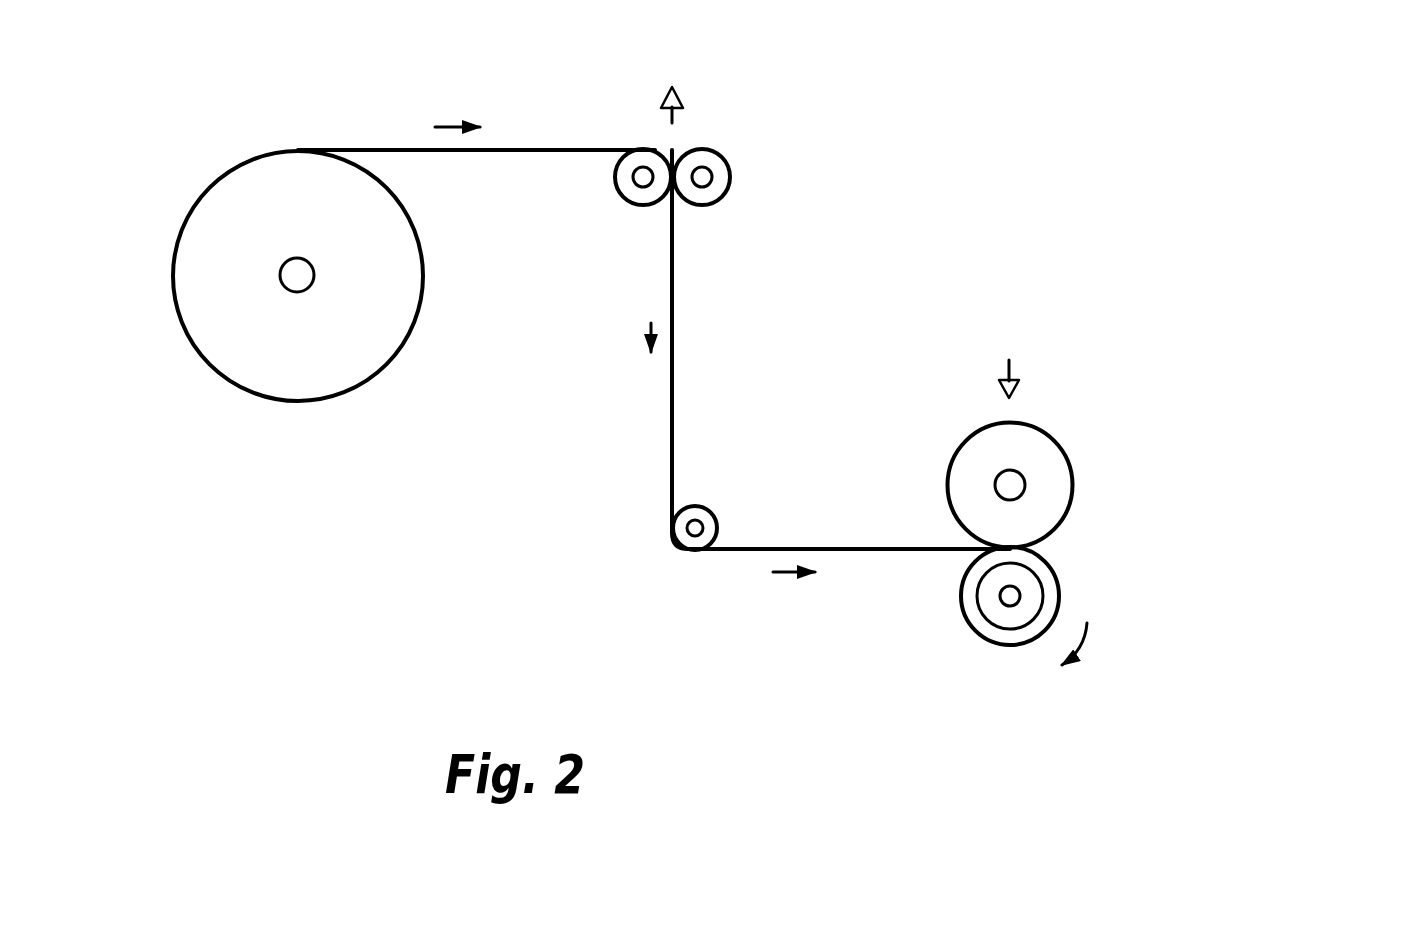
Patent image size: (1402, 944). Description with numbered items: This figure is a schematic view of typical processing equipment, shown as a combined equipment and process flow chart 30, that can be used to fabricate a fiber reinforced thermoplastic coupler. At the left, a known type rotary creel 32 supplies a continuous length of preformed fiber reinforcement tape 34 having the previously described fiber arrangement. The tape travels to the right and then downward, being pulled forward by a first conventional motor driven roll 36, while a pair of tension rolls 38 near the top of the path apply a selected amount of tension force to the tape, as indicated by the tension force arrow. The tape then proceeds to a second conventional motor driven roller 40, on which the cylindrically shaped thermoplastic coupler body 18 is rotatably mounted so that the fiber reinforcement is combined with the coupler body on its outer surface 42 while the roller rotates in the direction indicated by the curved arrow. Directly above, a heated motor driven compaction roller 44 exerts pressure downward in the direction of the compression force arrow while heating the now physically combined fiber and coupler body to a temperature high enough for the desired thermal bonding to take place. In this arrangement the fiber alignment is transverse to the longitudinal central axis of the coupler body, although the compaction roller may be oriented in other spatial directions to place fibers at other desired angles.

The combined equipment and process flow chart 30 is at (728, 384).
The rotary creel 32 is at (180, 330).
The fiber reinforcement tape 34 is at (370, 150).
The first motor driven roll 36 is at (703, 506).
The tension rolls 38 is at (620, 190).
The second motor driven roller 40 is at (1015, 630).
The outer surface 42 is at (983, 640).
The compaction roller 44 is at (1070, 462).
The thermoplastic coupler body 18 is at (972, 613).